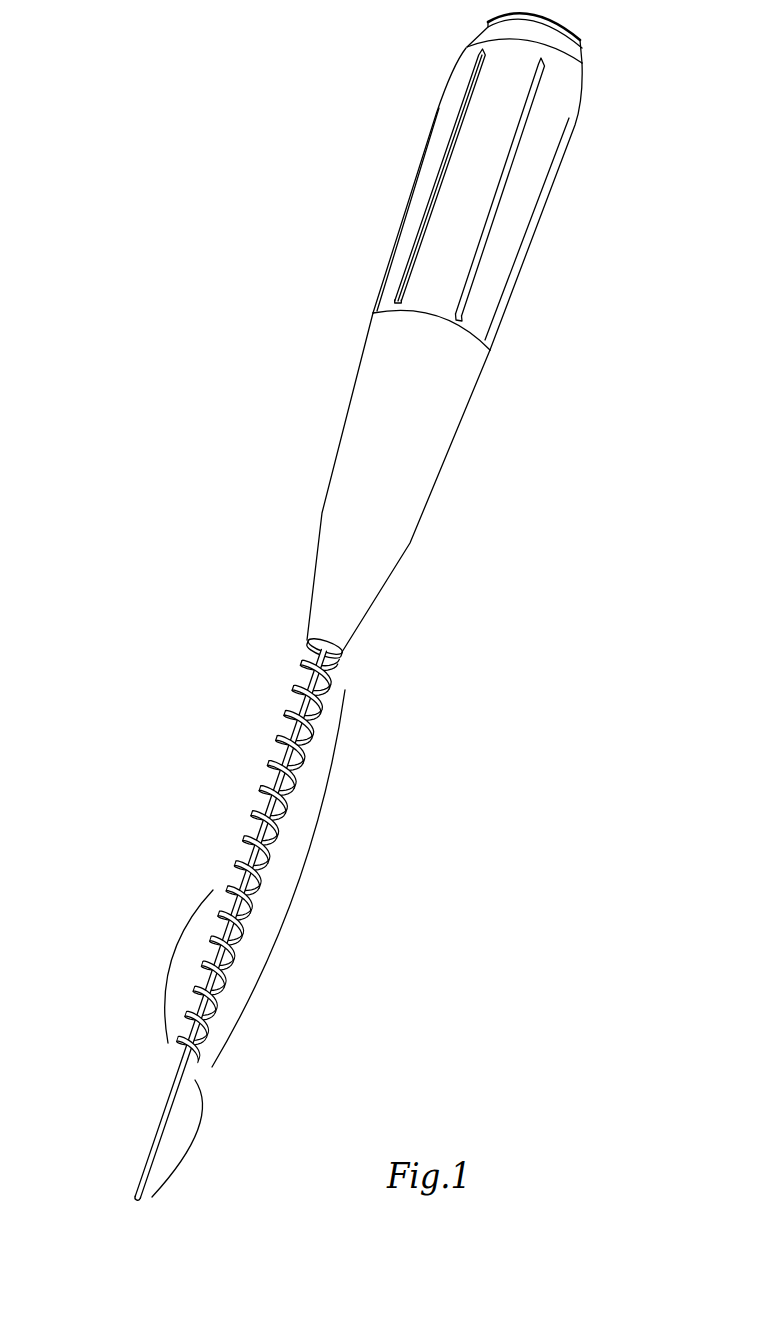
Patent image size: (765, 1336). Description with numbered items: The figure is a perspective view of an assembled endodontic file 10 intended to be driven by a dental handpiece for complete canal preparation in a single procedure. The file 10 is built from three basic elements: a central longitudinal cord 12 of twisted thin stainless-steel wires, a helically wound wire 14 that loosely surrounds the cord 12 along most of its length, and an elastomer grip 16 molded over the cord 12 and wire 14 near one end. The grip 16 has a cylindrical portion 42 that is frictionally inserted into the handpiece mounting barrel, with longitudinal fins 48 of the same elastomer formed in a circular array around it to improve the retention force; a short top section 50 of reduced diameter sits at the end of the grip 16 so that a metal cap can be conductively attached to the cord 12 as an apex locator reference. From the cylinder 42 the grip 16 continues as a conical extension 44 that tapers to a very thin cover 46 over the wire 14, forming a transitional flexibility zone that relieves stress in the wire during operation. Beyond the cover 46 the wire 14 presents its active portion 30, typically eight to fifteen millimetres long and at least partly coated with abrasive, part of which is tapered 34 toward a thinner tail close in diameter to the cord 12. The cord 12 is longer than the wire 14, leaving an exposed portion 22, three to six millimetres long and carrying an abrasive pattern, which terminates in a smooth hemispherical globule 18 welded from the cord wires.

The endodontic file 10 is at (503, 564).
The central longitudinal cord 12 is at (153, 1130).
The helically wound wire 14 is at (257, 793).
The elastomer grip 16 is at (473, 359).
The hemispherical globule 18 is at (137, 1200).
The exposed portion 22 is at (192, 1145).
The active portion 30 is at (310, 863).
The tapered part 34 is at (175, 947).
The cylindrical portion 42 is at (477, 199).
The conical extension 44 is at (387, 515).
The thin cover 46 is at (350, 648).
The longitudinal fins 48 is at (478, 260).
The top section 50 is at (584, 53).